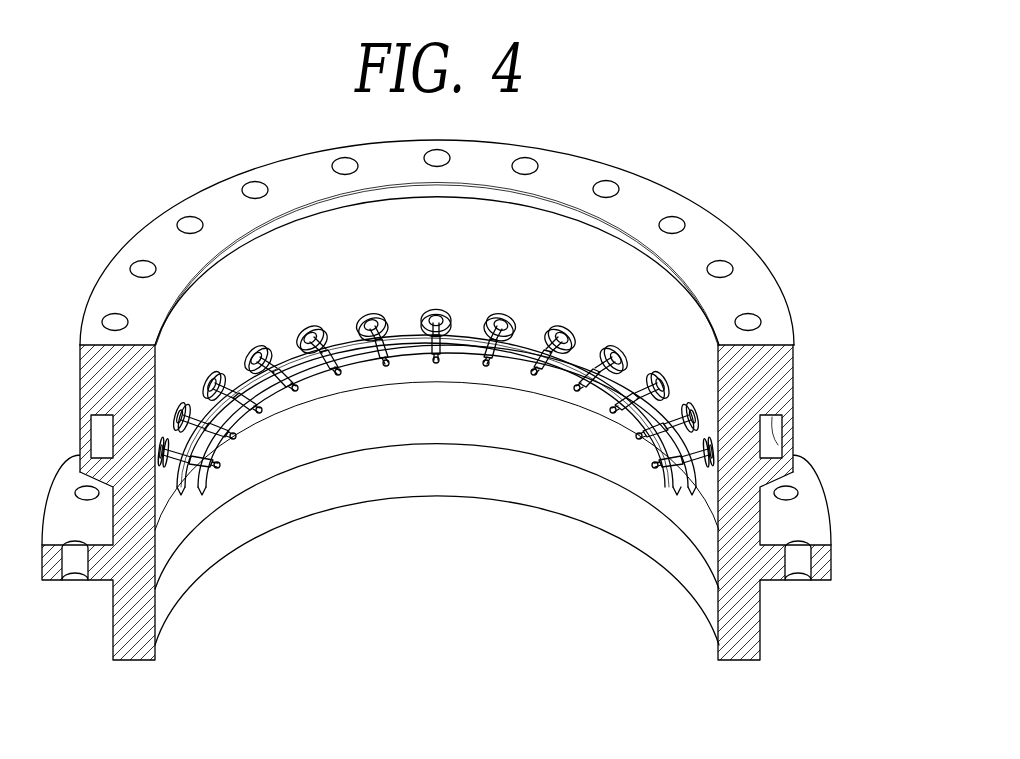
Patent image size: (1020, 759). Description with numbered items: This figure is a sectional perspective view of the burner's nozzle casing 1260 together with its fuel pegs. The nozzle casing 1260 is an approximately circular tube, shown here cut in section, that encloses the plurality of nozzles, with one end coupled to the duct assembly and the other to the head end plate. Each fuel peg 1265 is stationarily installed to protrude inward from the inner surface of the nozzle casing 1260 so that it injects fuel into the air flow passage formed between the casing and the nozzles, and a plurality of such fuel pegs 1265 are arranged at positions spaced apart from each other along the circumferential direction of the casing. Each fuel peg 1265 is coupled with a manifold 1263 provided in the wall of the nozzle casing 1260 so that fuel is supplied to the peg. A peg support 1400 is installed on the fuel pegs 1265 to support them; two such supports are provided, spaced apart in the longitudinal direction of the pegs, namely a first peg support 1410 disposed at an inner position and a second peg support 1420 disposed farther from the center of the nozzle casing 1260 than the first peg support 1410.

The nozzle casing 1260 is at (510, 402).
The manifold 1263 is at (782, 445).
The fuel peg 1265 is at (660, 460).
The peg support 1400 is at (436, 506).
The first peg support 1410 is at (673, 482).
The second peg support 1420 is at (697, 487).